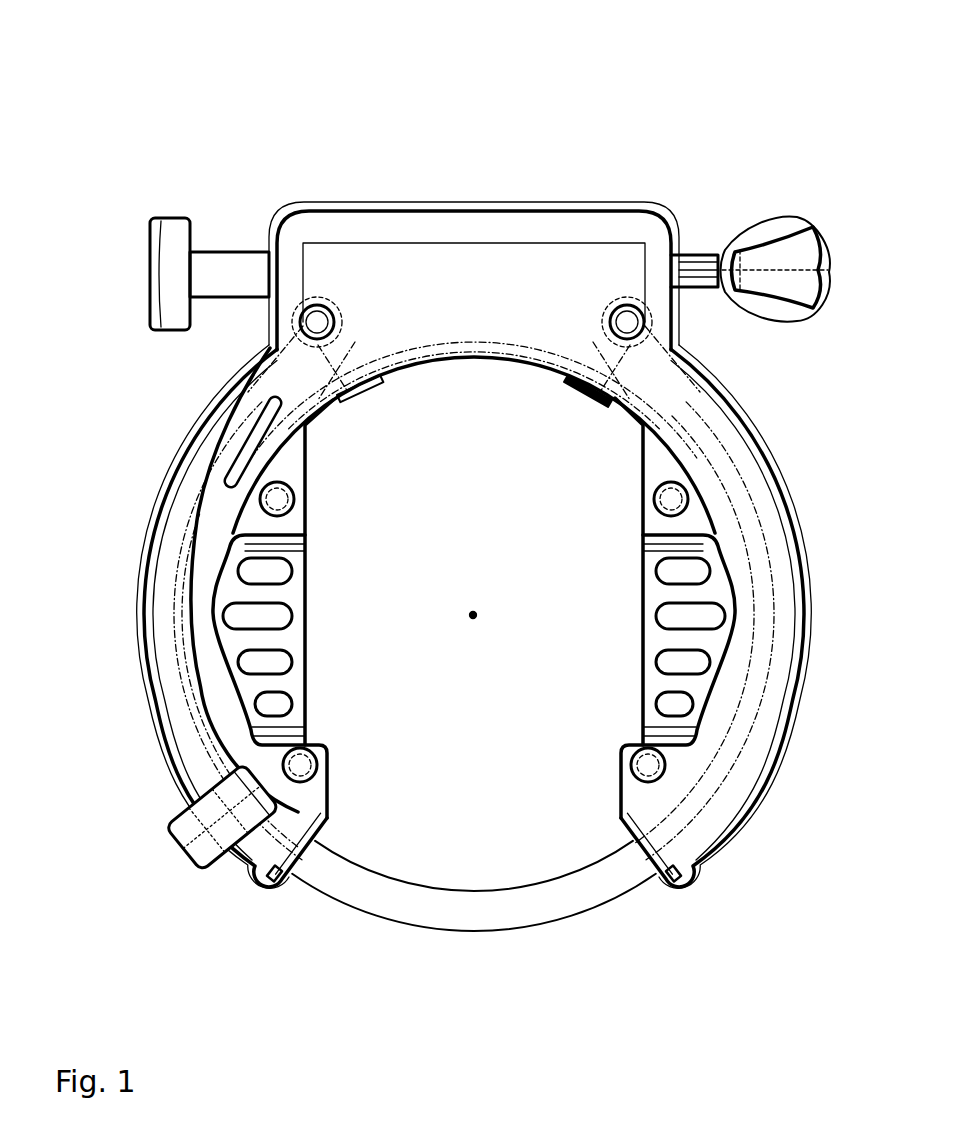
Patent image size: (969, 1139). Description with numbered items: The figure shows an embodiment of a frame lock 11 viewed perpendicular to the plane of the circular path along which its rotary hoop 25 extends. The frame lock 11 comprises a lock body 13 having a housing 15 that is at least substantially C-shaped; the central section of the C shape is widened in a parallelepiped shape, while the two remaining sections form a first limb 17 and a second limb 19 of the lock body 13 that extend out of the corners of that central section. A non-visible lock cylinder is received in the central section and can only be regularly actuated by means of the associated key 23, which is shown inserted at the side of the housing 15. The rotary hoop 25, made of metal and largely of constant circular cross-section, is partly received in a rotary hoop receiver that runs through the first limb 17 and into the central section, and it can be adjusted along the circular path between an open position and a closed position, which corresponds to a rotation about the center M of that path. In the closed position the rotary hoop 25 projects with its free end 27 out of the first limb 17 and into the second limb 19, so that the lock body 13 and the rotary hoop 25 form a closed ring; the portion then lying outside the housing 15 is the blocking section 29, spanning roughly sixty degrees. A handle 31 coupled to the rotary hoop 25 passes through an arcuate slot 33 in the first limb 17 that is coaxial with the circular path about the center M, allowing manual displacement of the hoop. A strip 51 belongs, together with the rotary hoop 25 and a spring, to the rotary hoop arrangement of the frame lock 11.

The frame lock 11 is at (238, 119).
The lock body 13 is at (391, 186).
The housing 15 is at (566, 265).
The first limb 17 is at (187, 737).
The second limb 19 is at (712, 780).
The key 23 is at (695, 262).
The rotary hoop 25 is at (500, 910).
The free end 27 is at (654, 880).
The blocking section 29 is at (463, 876).
The handle 31 is at (187, 843).
The slot 33 is at (216, 468).
The strip 51 is at (194, 535).
The center M is at (476, 618).